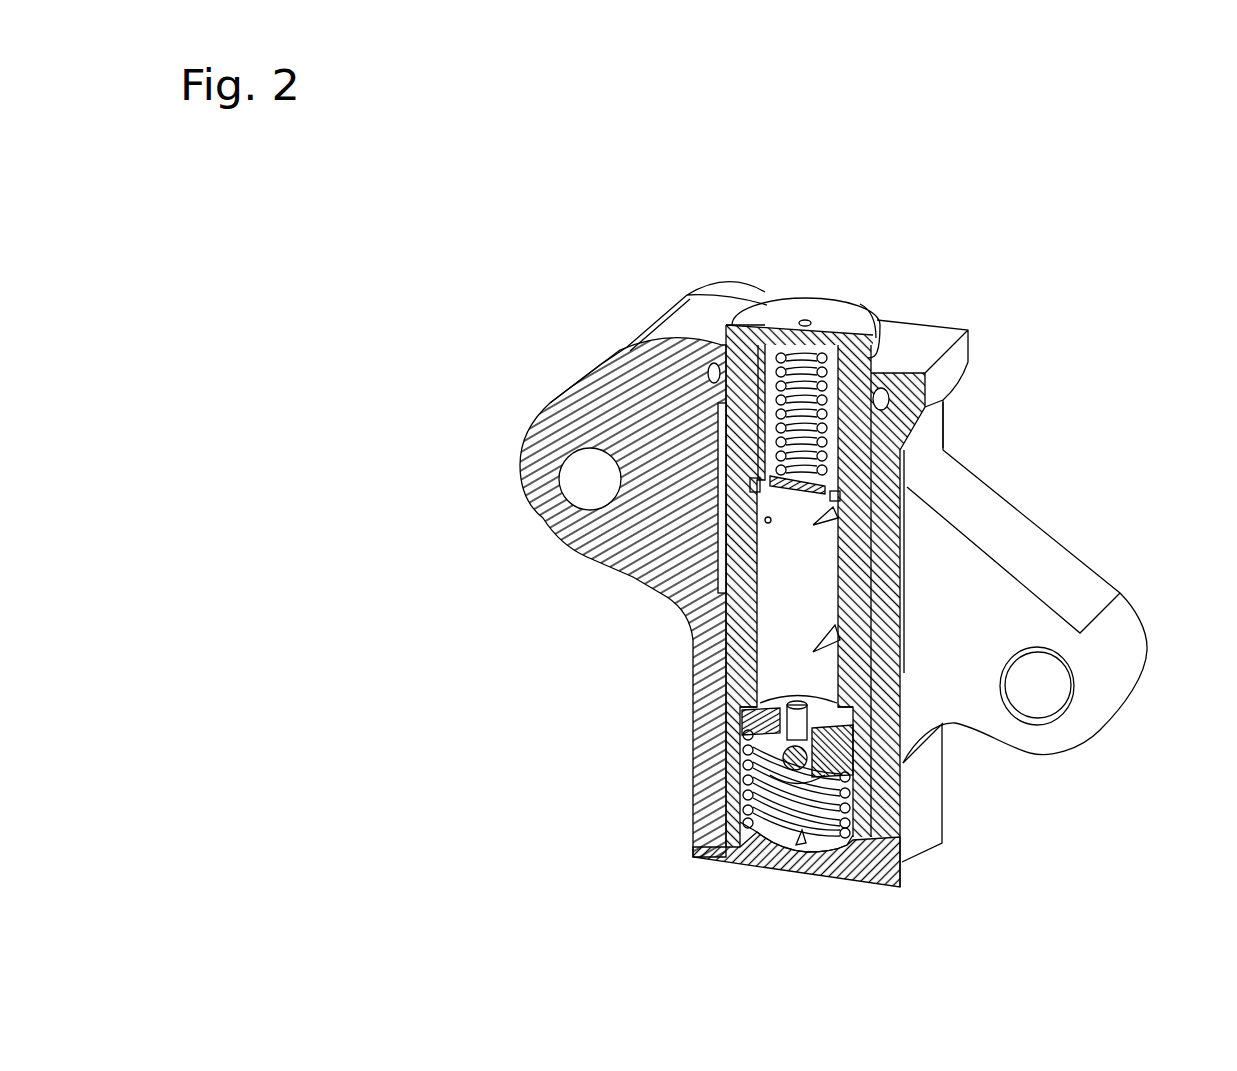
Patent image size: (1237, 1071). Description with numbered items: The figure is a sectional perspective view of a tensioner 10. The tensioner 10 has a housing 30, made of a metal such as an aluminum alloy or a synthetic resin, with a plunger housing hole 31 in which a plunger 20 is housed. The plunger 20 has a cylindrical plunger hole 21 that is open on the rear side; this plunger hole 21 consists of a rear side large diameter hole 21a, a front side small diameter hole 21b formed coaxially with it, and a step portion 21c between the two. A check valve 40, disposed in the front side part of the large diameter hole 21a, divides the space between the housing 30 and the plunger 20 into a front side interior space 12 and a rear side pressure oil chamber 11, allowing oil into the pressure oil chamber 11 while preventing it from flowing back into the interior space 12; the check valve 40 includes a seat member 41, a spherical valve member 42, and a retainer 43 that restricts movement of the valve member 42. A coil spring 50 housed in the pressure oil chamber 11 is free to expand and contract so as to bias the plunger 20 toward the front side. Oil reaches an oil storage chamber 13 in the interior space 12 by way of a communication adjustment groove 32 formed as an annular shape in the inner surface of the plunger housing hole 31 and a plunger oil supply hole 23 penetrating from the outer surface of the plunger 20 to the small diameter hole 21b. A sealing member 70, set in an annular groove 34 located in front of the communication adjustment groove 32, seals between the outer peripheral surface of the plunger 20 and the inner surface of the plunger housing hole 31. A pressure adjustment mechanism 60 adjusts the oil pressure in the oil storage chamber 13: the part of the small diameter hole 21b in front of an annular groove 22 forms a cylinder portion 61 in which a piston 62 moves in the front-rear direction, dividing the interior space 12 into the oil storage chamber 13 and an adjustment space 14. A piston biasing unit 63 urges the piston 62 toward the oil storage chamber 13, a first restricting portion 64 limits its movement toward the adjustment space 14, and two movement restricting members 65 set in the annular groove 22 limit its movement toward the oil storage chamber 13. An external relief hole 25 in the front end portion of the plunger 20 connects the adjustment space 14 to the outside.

The tensioner 10 is at (501, 194).
The pressure oil chamber 11 is at (692, 855).
The interior space 12 is at (1163, 365).
The oil storage chamber 13 is at (903, 502).
The adjustment space 14 is at (924, 408).
The plunger 20 is at (768, 340).
The plunger hole 21 is at (1180, 478).
The large diameter hole 21a is at (903, 677).
The small diameter hole 21b is at (903, 593).
The step portion 21c is at (757, 703).
The annular groove 22 is at (735, 465).
The plunger oil supply hole 23 is at (723, 557).
The external relief hole 25 is at (808, 320).
The housing 30 is at (540, 520).
The plunger housing hole 31 is at (800, 840).
The communication adjustment groove 32 is at (728, 430).
The annular groove 34 is at (708, 368).
The check valve 40 is at (1125, 833).
The seat member 41 is at (855, 750).
The valve member 42 is at (860, 818).
The retainer 43 is at (850, 858).
The coil spring 50 is at (748, 790).
The pressure adjustment mechanism 60 is at (945, 402).
The cylinder portion 61 is at (730, 322).
The piston 62 is at (842, 430).
The piston biasing unit 63 is at (925, 360).
The first restricting portion 64 is at (818, 355).
The movement restricting member 65 is at (762, 520).
The sealing member 70 is at (722, 338).